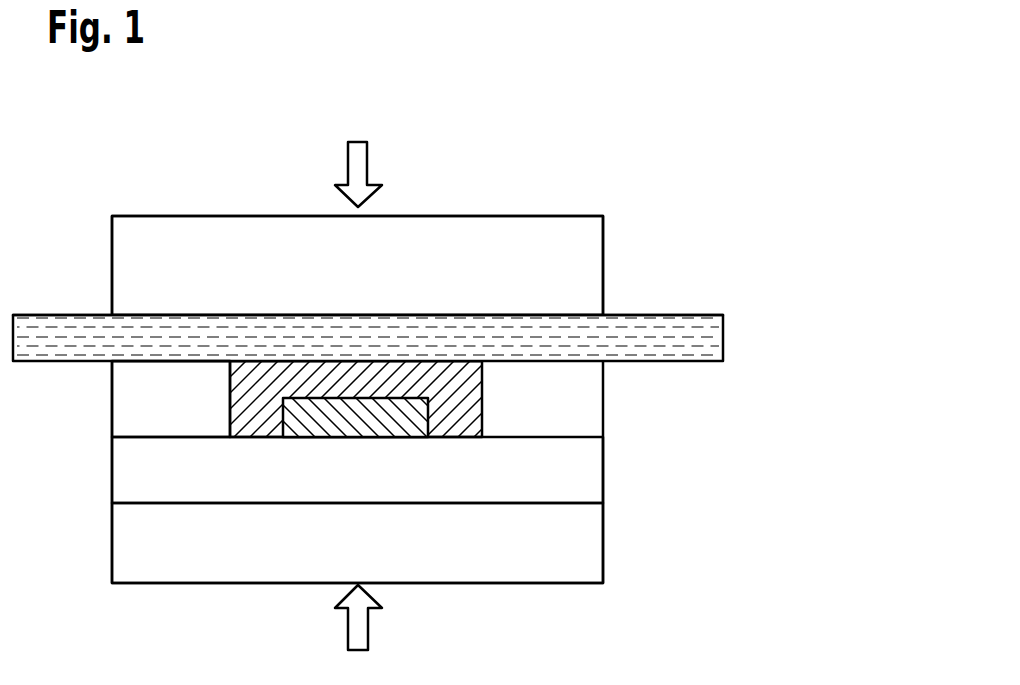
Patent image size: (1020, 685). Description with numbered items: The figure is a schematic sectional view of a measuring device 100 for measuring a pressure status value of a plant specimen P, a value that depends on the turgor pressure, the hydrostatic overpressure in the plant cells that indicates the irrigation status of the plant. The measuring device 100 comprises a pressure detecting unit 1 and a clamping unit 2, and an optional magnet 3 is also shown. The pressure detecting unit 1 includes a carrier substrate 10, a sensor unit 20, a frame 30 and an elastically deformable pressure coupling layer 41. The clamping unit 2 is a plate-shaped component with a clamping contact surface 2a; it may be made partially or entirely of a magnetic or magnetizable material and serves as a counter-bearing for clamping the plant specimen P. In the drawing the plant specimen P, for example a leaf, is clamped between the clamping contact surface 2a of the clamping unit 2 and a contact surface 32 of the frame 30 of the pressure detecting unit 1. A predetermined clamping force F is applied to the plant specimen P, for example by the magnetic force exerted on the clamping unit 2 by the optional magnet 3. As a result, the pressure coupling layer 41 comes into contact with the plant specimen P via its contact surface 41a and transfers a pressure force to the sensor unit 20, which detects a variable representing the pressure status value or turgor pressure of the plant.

The measuring device 100 is at (699, 125).
The pressure detecting unit 1 is at (737, 392).
The clamping unit 2 is at (142, 275).
The clamping contact surface 2a is at (123, 337).
The magnet 3 is at (588, 547).
The carrier substrate 10 is at (588, 483).
The sensor unit 20 is at (410, 427).
The frame 30 is at (155, 413).
The contact surface 32 is at (210, 353).
The pressure coupling layer 41 is at (467, 388).
The contact surface 41a is at (433, 357).
The plant specimen P is at (672, 328).
The clamping force F is at (360, 160).